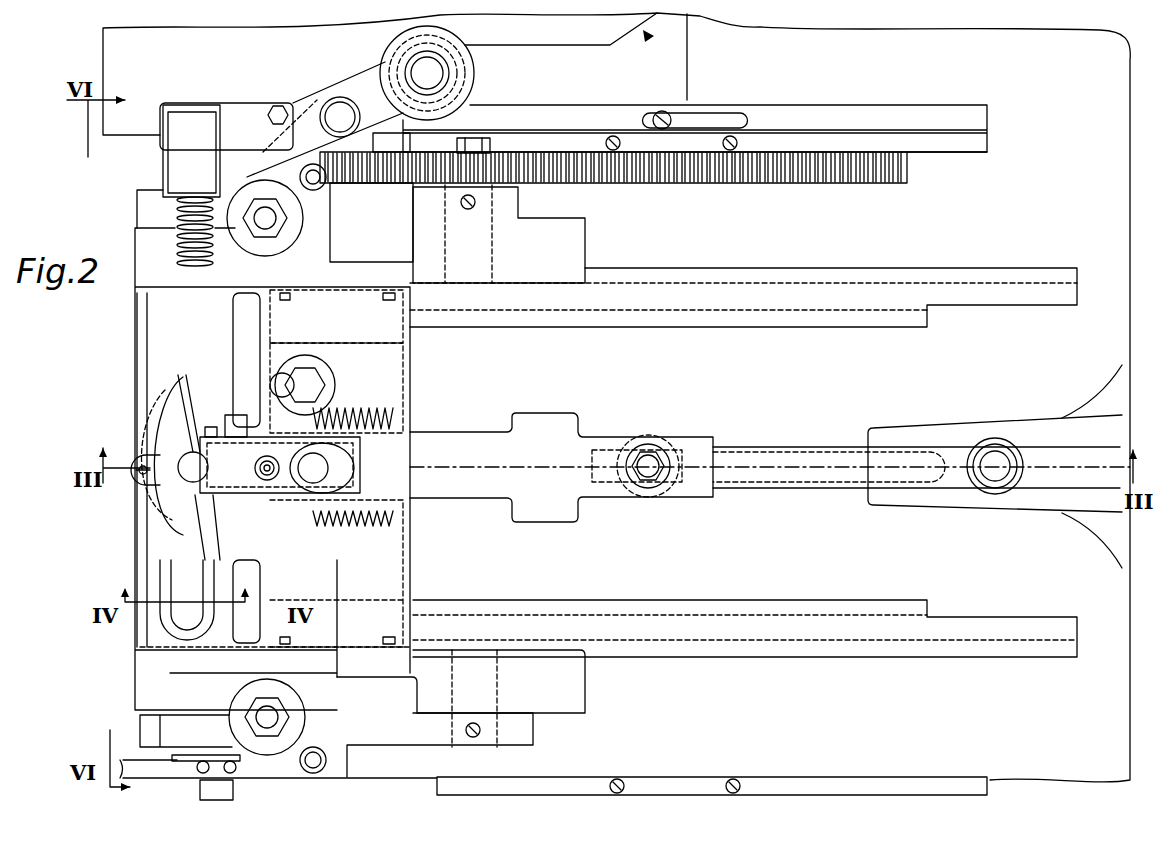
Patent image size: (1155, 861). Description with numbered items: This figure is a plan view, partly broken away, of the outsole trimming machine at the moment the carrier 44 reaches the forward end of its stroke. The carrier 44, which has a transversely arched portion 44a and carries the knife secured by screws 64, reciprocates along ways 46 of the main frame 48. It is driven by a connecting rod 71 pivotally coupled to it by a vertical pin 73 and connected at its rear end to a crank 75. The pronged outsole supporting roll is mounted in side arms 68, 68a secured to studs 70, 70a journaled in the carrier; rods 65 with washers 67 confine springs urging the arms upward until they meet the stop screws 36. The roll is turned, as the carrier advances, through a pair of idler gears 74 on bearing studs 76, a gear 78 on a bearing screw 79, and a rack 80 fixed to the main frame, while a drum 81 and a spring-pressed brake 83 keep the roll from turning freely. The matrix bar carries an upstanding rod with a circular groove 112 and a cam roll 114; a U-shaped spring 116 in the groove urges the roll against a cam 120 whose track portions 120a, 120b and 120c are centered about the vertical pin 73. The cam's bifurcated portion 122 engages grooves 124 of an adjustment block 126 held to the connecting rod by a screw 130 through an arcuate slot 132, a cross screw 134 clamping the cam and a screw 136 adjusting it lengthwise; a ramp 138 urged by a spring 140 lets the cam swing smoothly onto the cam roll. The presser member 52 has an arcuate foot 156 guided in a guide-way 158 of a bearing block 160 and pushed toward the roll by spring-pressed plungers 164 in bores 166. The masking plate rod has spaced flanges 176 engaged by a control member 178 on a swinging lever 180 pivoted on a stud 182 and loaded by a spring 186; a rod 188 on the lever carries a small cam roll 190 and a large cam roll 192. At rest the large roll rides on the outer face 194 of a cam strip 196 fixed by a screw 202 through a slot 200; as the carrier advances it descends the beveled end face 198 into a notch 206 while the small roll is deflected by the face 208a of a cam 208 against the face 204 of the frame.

The stop screws 36 is at (309, 176).
The carrier 44 is at (265, 173).
The transversely arched portion 44a is at (410, 408).
The ways 46 is at (660, 268).
The main frame 48 is at (1116, 40).
The presser member 52 is at (207, 590).
The screws 64 is at (322, 386).
The rods 65 is at (265, 230).
The washers 67 is at (240, 248).
The side arm 68 is at (392, 220).
The side arm 68a is at (425, 735).
The stud 70 is at (492, 262).
The stud 70a is at (497, 697).
The connecting rod 71 is at (736, 445).
The vertical pin 73 is at (380, 474).
The idler gears 74 is at (375, 185).
The crank 75 is at (1010, 428).
The bearing studs 76 is at (381, 133).
The gear 78 is at (490, 160).
The bearing screw 79 is at (472, 138).
The rack 80 is at (783, 185).
The drum 81 is at (180, 755).
The spring-pressed brake 83 is at (200, 787).
The circular groove 112 is at (385, 298).
The cam roll 114 is at (180, 378).
The U-shaped spring 116 is at (200, 548).
The cam 120 is at (178, 462).
The track portion 120a is at (222, 522).
The track portion 120b is at (168, 515).
The track portion 120c is at (202, 402).
The bifurcated portion 122 is at (242, 555).
The grooves 124 is at (280, 465).
The adjustment block 126 is at (280, 492).
The screw 130 is at (345, 478).
The arcuate slot 132 is at (320, 463).
The cross screw 134 is at (240, 415).
The screw 136 is at (147, 458).
The ramp 138 is at (186, 440).
The spring 140 is at (138, 492).
The arcuate foot 156 is at (348, 613).
The guide-way 158 is at (405, 530).
The bearing block 160 is at (410, 350).
The spring-pressed plungers 164 is at (328, 338).
The bores 166 is at (405, 380).
The spaced flanges 176 is at (170, 208).
The control member 178 is at (212, 103).
The swinging lever 180 is at (308, 100).
The stud 182 is at (340, 97).
The spring 186 is at (180, 245).
The rod 188 is at (435, 70).
The small cam roll 190 is at (468, 96).
The large cam roll 192 is at (475, 60).
The outer face 194 is at (738, 108).
The cam strip 196 is at (830, 118).
The beveled end face 198 is at (613, 112).
The slot 200 is at (773, 118).
The screw 202 is at (670, 110).
The face 204 is at (585, 100).
The notch 206 is at (607, 114).
The cam 208 is at (603, 44).
The face 208a is at (647, 37).